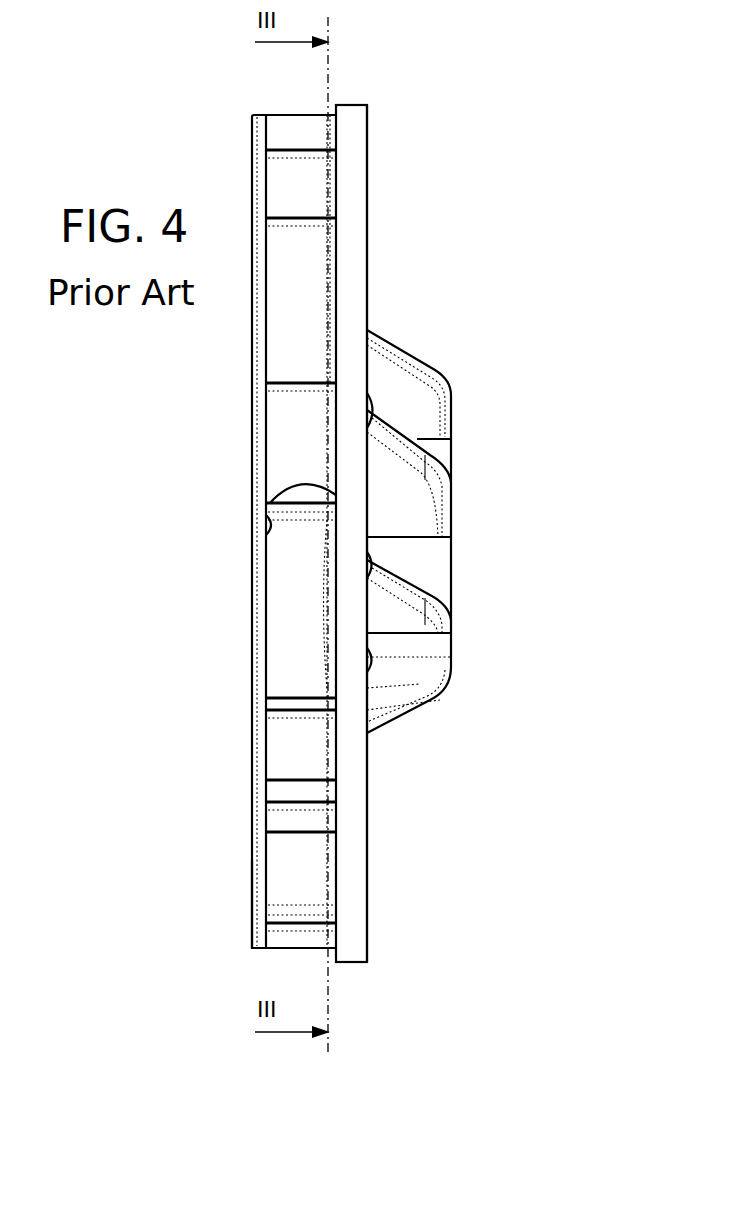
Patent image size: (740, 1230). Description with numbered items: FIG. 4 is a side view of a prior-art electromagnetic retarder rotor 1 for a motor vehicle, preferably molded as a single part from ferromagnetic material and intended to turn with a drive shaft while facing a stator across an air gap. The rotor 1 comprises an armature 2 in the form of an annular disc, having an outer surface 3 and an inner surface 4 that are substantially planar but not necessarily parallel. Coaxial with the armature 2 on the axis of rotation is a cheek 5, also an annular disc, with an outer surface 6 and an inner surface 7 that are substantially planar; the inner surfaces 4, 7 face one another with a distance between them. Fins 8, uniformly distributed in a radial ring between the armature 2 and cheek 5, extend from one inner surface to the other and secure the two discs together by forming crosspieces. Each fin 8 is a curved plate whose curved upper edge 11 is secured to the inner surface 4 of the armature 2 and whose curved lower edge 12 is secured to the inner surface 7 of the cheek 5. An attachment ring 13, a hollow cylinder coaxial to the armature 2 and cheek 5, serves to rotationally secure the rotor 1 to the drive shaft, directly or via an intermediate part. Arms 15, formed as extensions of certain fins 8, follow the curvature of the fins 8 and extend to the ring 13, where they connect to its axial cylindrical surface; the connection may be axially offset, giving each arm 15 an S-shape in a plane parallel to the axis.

The electromagnetic retarder rotor 1 is at (432, 238).
The armature 2 is at (380, 152).
The outer surface 3 is at (368, 257).
The inner surface 4 is at (330, 315).
The cheek 5 is at (240, 173).
The outer surface 6 is at (250, 870).
The inner surface 7 is at (272, 898).
The fins 8 is at (282, 565).
The upper edge 11 is at (336, 500).
The lower edge 12 is at (270, 535).
The attachment ring 13 is at (472, 552).
The arms 15 is at (282, 417).